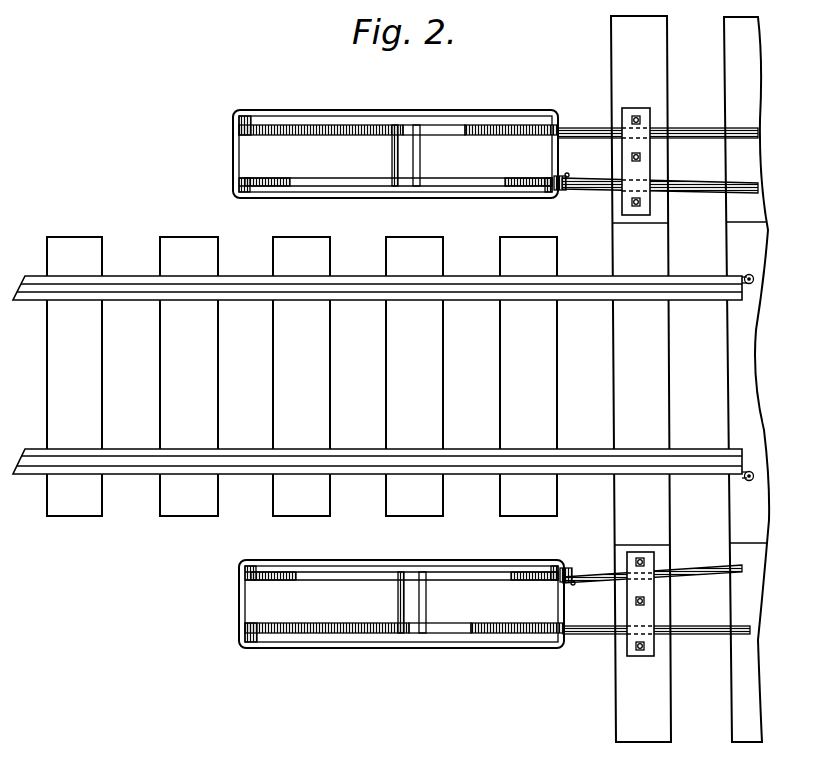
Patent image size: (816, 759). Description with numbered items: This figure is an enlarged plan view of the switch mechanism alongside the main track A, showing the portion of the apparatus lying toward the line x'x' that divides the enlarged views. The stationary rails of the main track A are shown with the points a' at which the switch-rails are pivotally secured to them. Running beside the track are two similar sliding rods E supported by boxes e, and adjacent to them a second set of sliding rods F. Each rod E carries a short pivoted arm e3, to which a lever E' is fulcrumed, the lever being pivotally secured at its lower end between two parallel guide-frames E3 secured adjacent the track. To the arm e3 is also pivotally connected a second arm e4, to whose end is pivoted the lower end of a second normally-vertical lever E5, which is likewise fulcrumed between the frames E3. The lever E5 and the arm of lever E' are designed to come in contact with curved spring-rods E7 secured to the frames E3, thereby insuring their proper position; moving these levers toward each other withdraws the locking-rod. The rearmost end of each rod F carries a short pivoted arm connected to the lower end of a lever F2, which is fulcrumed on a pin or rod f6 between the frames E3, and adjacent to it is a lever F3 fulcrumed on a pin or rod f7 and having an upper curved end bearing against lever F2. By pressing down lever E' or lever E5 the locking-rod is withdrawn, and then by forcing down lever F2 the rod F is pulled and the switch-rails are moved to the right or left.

The main track A is at (377, 376).
The pivot of switch-rails a' is at (723, 379).
The curved spring-rods E7 is at (234, 124).
The guide-frames E3 is at (399, 124).
The lever E' is at (531, 379).
The second normally-vertical lever E5 is at (267, 177).
The second arm e4 is at (332, 180).
The short pivoted arm e3 is at (560, 190).
The boxes e is at (628, 201).
The sliding rods E is at (660, 380).
The sliding rods F is at (688, 130).
The lever F2 is at (390, 129).
The lever F3 is at (484, 136).
The pin or rod f6 is at (392, 163).
The pin or rod f7 is at (421, 158).
The line x' x' is at (615, 382).